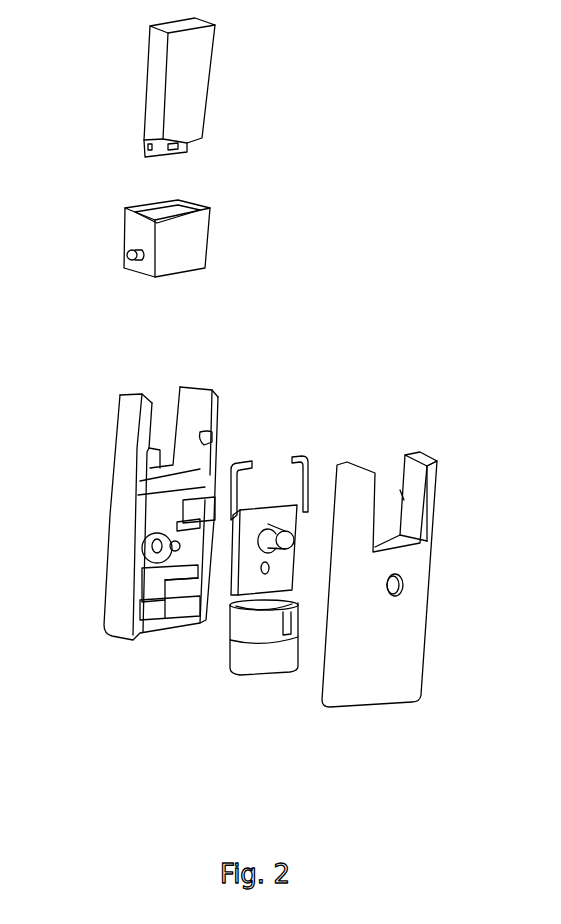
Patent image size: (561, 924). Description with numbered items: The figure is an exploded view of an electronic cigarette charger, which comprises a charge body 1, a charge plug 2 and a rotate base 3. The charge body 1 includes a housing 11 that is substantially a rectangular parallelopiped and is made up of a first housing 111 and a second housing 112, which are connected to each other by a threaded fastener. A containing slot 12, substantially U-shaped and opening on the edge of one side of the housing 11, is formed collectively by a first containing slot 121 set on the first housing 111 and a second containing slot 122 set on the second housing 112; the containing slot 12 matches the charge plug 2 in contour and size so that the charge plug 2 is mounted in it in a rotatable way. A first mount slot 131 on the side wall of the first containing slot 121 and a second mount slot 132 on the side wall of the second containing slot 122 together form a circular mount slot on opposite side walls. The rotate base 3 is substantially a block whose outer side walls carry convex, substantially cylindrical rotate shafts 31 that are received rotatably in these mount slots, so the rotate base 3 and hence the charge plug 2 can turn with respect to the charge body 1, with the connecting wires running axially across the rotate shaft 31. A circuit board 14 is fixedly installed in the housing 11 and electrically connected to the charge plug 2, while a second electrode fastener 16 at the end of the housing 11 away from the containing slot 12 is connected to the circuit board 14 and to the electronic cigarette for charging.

The charge body 1 is at (90, 430).
The charge plug 2 is at (197, 82).
The rotate base 3 is at (233, 198).
The rotate shaft 31 is at (127, 257).
The housing 11 is at (97, 727).
The first housing 111 is at (113, 635).
The second housing 112 is at (417, 612).
The containing slot 12 is at (180, 306).
The first containing slot 121 is at (165, 405).
The second containing slot 122 is at (388, 478).
The first mount slot 131 is at (212, 432).
The second mount slot 132 is at (404, 497).
The circuit board 14 is at (275, 505).
The second electrode fastener 16 is at (263, 658).